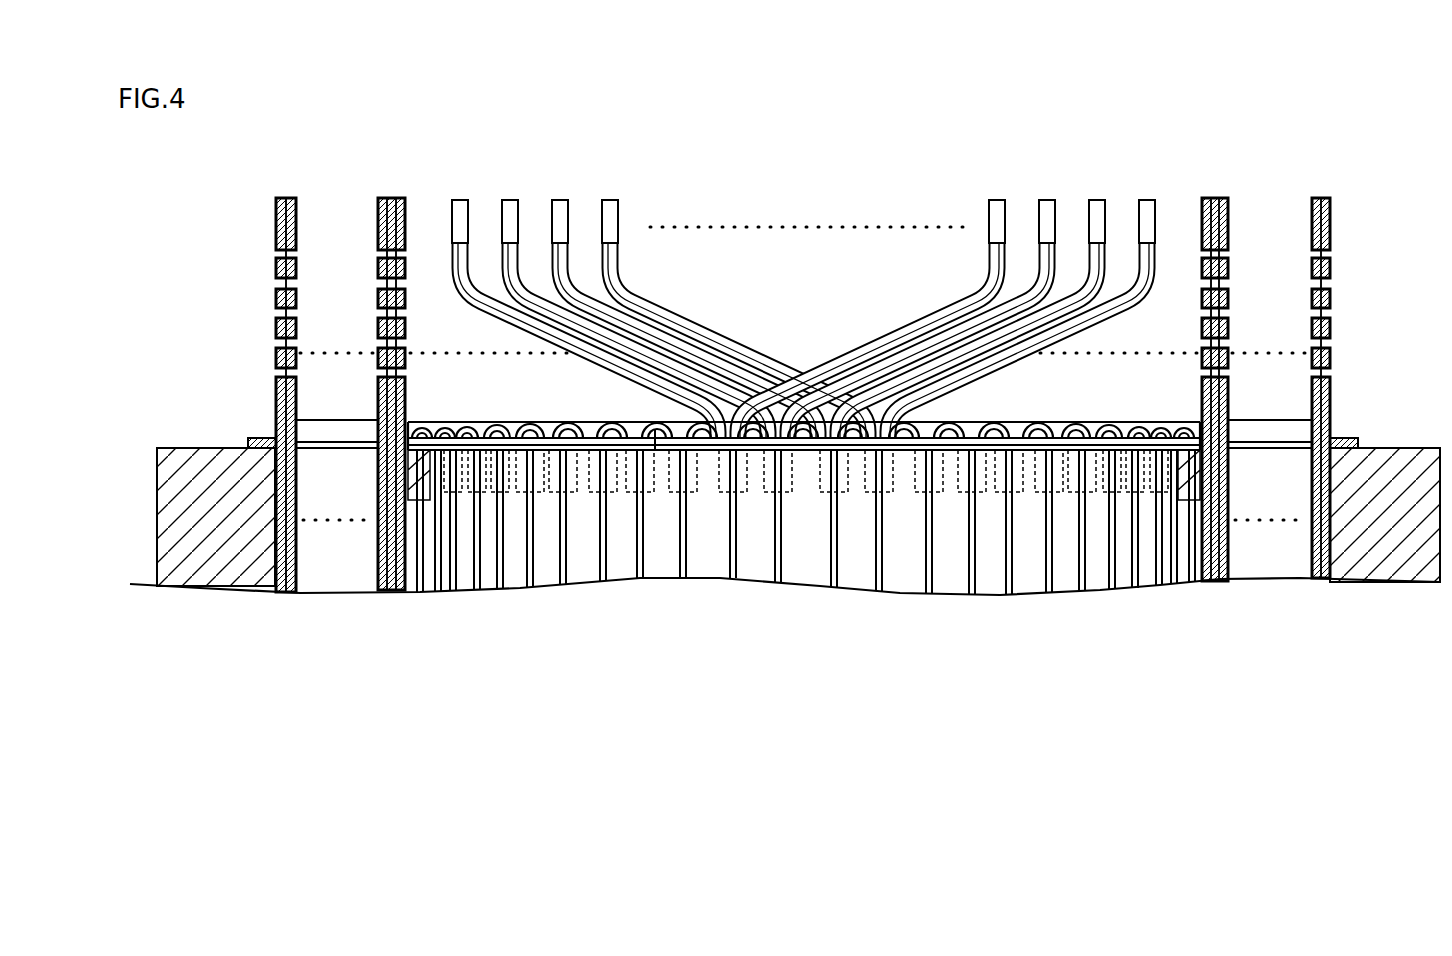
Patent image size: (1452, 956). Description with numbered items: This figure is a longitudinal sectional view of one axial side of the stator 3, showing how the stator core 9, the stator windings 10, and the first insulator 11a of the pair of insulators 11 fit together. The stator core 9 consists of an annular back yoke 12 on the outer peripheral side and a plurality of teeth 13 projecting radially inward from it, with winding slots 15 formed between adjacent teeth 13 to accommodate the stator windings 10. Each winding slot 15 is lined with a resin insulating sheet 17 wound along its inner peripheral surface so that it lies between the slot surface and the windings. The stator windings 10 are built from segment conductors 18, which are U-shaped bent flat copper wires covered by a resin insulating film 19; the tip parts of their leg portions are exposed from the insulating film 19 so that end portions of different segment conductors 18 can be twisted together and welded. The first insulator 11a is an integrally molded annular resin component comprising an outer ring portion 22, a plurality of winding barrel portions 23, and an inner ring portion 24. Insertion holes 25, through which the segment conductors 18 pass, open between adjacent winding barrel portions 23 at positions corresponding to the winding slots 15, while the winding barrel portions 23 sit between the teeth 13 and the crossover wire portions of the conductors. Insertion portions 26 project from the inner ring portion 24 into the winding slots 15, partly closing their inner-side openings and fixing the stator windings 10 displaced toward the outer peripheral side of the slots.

The stator 3 is at (165, 215).
The stator core 9 is at (155, 480).
The stator windings 10 is at (804, 399).
The insulator 11 is at (804, 409).
The first insulator 11a is at (458, 422).
The back yoke 12 is at (200, 448).
The teeth 13 is at (545, 566).
The winding slots 15 is at (320, 514).
The insulating sheet 17 is at (280, 594).
The segment conductors 18 is at (276, 222).
The insulating film 19 is at (296, 268).
The outer ring portion 22 is at (262, 438).
The winding barrel portions 23 is at (545, 422).
The inner ring portion 24 is at (655, 450).
The insertion holes 25 is at (340, 420).
The insertion portions 26 is at (422, 470).